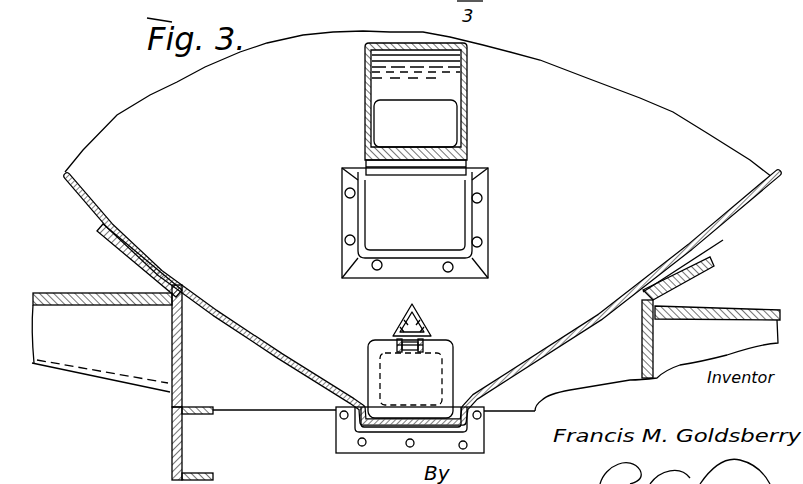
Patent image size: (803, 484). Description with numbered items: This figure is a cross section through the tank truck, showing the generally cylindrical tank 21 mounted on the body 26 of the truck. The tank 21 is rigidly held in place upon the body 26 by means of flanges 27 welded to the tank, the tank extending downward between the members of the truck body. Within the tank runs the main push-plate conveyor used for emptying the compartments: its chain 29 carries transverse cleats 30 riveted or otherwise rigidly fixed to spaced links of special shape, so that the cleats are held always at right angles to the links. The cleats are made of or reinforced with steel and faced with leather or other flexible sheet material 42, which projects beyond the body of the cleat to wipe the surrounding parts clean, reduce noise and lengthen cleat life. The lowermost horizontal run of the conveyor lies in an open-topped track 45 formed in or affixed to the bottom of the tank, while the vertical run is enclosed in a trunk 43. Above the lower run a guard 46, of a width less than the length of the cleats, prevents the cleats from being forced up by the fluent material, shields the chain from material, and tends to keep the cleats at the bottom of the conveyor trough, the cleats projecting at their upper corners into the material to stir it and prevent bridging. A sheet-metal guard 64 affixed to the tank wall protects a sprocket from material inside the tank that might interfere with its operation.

The tank 21 is at (785, 164).
The body 26 is at (47, 293).
The flanges 27 is at (157, 277).
The chain 29 is at (407, 351).
The cleats 30 is at (446, 369).
The flexible sheet material 42 is at (378, 117).
The trunk 43 is at (467, 133).
The track 45 is at (383, 428).
The guard 46 is at (423, 316).
The sheet-metal guard 64 is at (578, 88).